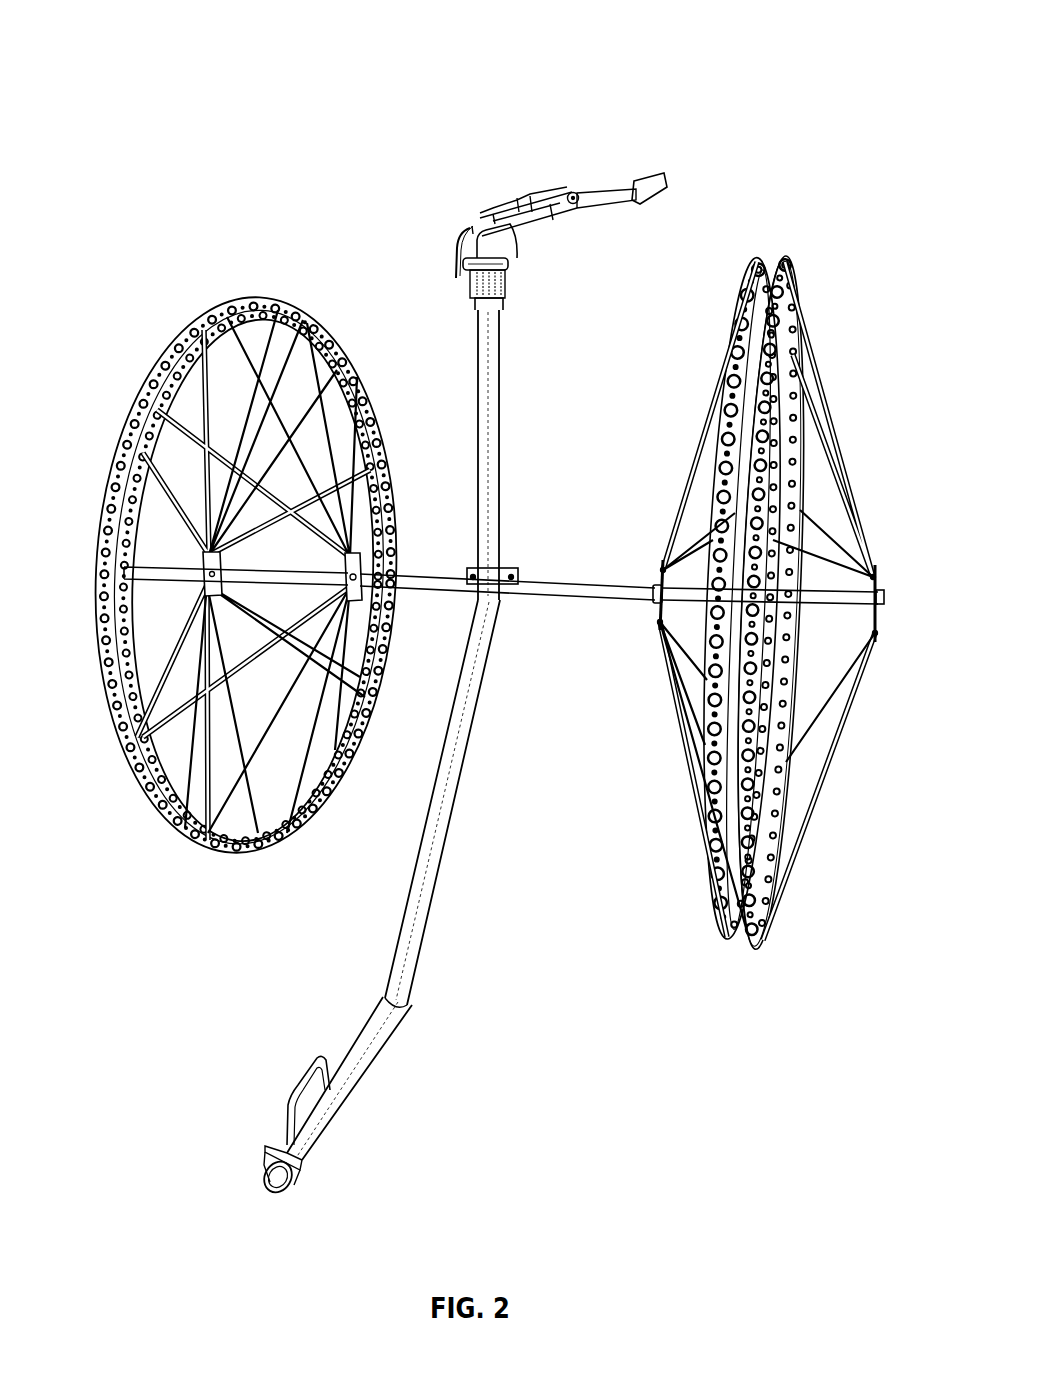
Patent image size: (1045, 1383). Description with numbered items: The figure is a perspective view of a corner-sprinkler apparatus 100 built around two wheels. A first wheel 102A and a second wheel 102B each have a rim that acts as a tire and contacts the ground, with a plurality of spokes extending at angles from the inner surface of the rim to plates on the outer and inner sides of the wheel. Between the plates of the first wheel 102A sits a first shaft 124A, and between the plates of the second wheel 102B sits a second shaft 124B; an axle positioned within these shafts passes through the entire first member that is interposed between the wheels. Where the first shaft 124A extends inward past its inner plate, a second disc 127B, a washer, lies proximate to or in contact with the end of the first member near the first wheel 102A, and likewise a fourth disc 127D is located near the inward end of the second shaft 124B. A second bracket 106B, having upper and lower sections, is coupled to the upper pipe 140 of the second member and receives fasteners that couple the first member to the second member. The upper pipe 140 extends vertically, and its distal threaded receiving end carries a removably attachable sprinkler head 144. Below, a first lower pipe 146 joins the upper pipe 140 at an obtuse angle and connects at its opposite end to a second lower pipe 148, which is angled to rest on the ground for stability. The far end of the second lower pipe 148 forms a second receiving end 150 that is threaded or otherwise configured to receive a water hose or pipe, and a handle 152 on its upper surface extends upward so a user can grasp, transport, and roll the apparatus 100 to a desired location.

The corner-sprinkler apparatus 100 is at (276, 38).
The first wheel 102A is at (120, 577).
The second wheel 102B is at (770, 450).
The second bracket 106B is at (506, 572).
The first shaft 124A is at (148, 492).
The second shaft 124B is at (828, 602).
The second disc 127B is at (375, 548).
The fourth disc 127D is at (657, 607).
The upper pipe 140 is at (500, 378).
The sprinkler head 144 is at (518, 216).
The first lower pipe 146 is at (468, 762).
The second lower pipe 148 is at (368, 1060).
The second receiving end 150 is at (272, 1192).
The handle 152 is at (298, 1086).